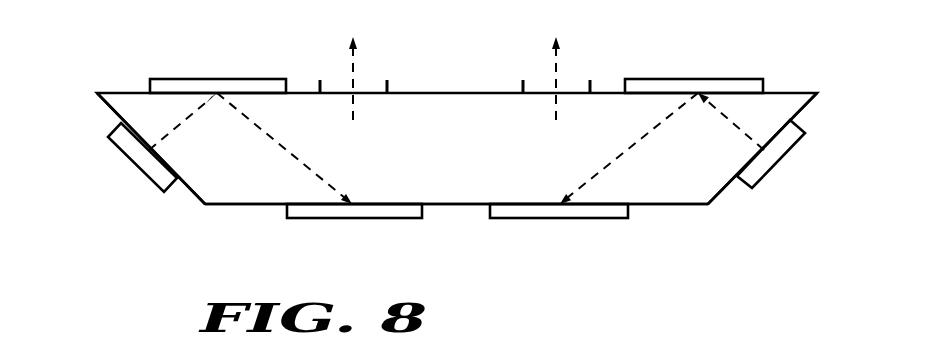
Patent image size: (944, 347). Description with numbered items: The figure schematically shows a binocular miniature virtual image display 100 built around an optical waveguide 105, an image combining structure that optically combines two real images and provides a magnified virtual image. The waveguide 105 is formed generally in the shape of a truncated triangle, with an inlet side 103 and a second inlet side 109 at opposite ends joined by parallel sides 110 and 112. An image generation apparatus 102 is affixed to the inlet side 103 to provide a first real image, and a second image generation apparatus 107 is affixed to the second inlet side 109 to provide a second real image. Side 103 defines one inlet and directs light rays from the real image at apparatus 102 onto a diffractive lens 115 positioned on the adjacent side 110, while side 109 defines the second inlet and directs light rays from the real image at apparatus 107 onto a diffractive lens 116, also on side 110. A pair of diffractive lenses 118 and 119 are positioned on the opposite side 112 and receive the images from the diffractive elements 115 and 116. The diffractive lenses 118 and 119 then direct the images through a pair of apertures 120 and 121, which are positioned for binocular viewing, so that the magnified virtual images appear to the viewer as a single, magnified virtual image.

The binocular miniature virtual image display 100 is at (568, 317).
The image generation apparatus 102 is at (133, 163).
The inlet side 103 is at (109, 105).
The optical waveguide 105 is at (608, 93).
The second image generation apparatus 107 is at (778, 160).
The second inlet side 109 is at (808, 101).
The side 110 is at (305, 93).
The side 112 is at (250, 206).
The diffractive lens 115 is at (202, 78).
The diffractive lens 116 is at (718, 78).
The diffractive lens 118 is at (338, 219).
The diffractive lens 119 is at (540, 219).
The aperture 120 is at (373, 63).
The aperture 121 is at (577, 63).